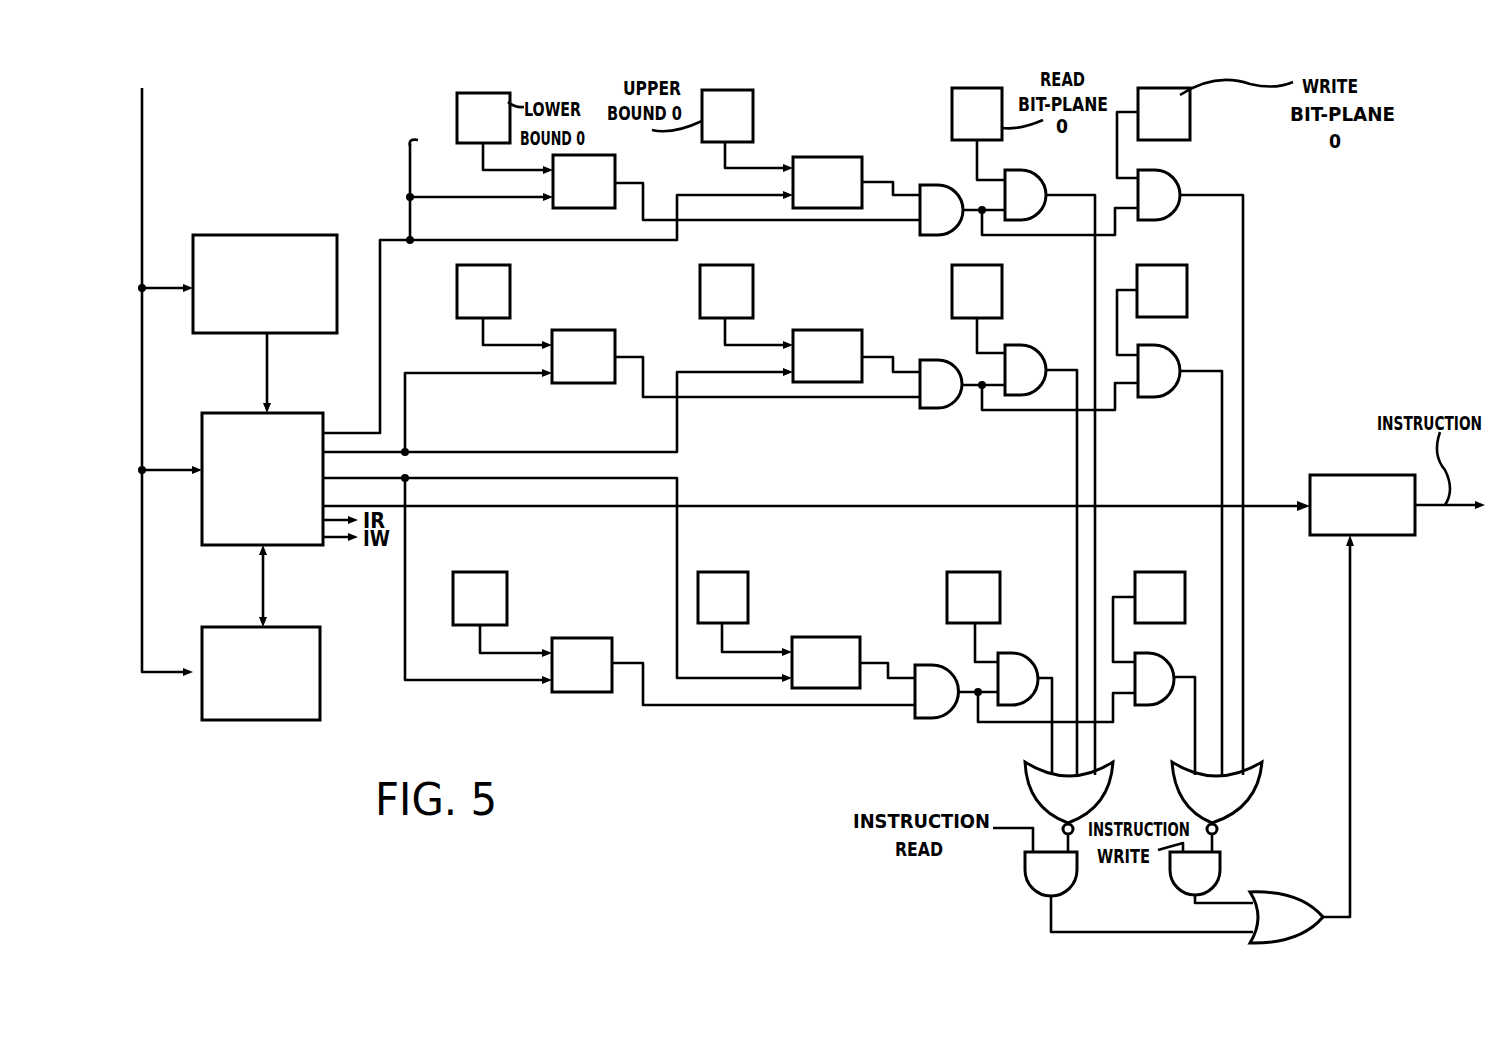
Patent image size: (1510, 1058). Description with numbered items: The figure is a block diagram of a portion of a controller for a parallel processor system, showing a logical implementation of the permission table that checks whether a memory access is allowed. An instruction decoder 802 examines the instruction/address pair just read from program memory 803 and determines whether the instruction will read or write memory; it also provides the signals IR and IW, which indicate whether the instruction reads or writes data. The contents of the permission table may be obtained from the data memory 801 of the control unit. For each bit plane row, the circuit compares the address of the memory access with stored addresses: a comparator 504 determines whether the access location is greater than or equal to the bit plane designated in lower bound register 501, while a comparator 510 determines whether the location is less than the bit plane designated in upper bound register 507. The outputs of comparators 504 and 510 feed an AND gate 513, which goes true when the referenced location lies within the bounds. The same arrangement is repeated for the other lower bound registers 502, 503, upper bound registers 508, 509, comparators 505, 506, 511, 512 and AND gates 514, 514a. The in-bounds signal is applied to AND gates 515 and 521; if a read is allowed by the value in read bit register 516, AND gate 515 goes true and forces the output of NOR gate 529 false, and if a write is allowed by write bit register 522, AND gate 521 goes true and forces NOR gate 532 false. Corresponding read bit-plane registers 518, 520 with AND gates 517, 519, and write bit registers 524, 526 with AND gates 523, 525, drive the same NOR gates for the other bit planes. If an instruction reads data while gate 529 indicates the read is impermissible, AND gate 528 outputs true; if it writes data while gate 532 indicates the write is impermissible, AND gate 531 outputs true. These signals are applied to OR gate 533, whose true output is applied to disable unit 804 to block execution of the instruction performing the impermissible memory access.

The data memory 801 is at (265, 266).
The instruction decoder 802 is at (309, 414).
The program memory 803 is at (314, 627).
The disable unit 804 is at (1343, 475).
The lower bound register 501 is at (483, 572).
The lower bound register 502 is at (510, 298).
The lower bound register 503 is at (457, 110).
The comparator 504 is at (582, 638).
The comparator 505 is at (590, 330).
The comparator 506 is at (615, 176).
The upper bound register 507 is at (723, 572).
The upper bound register 508 is at (753, 280).
The upper bound register 509 is at (753, 126).
The comparator 510 is at (825, 637).
The comparator 511 is at (833, 330).
The comparator 512 is at (830, 157).
The AND gate 513 is at (930, 665).
The AND gate 514 is at (935, 360).
The AND gate 514a is at (935, 185).
The AND gate 515 is at (1020, 658).
The read bit register 516 is at (975, 572).
The AND gate 517 is at (1040, 345).
The read bit-plane register 518 is at (1002, 283).
The AND gate 519 is at (1030, 172).
The read bit-plane register 520 is at (952, 106).
The AND gate 521 is at (1157, 665).
The write bit register 522 is at (1162, 572).
The AND gate 523 is at (1160, 397).
The write bit register 524 is at (1177, 265).
The AND gate 525 is at (1165, 185).
The write bit register 526 is at (1190, 111).
The AND gate 528 is at (1025, 870).
The NOR gate 529 is at (1030, 787).
The AND gate 531 is at (1170, 870).
The NOR gate 532 is at (1258, 787).
The OR gate 533 is at (1285, 893).